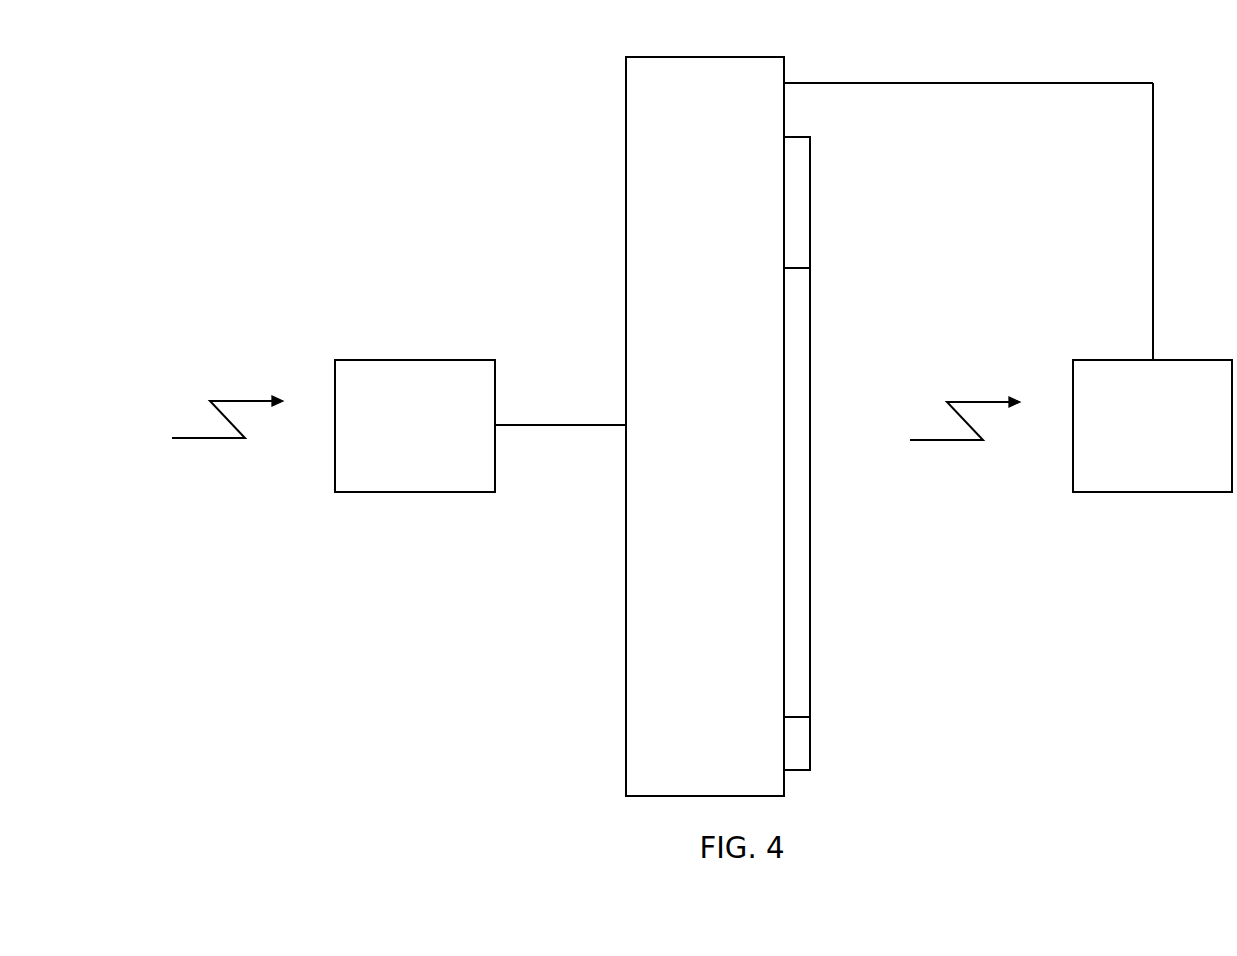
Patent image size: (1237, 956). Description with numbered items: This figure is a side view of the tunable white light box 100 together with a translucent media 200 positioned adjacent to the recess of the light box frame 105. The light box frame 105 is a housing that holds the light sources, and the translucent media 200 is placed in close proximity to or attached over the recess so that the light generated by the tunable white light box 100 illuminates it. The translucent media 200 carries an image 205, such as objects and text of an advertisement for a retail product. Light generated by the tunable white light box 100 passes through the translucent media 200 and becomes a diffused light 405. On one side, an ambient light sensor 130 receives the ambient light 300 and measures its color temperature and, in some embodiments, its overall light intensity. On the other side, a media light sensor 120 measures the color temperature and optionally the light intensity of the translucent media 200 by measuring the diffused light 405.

The tunable white light box 100 is at (336, 83).
The light box frame 105 is at (690, 87).
The media light sensor 120 is at (1137, 392).
The ambient light sensor 130 is at (400, 392).
The translucent media 200 is at (810, 189).
The image 205 is at (810, 321).
The ambient light 300 is at (230, 358).
The diffused light 405 is at (968, 358).